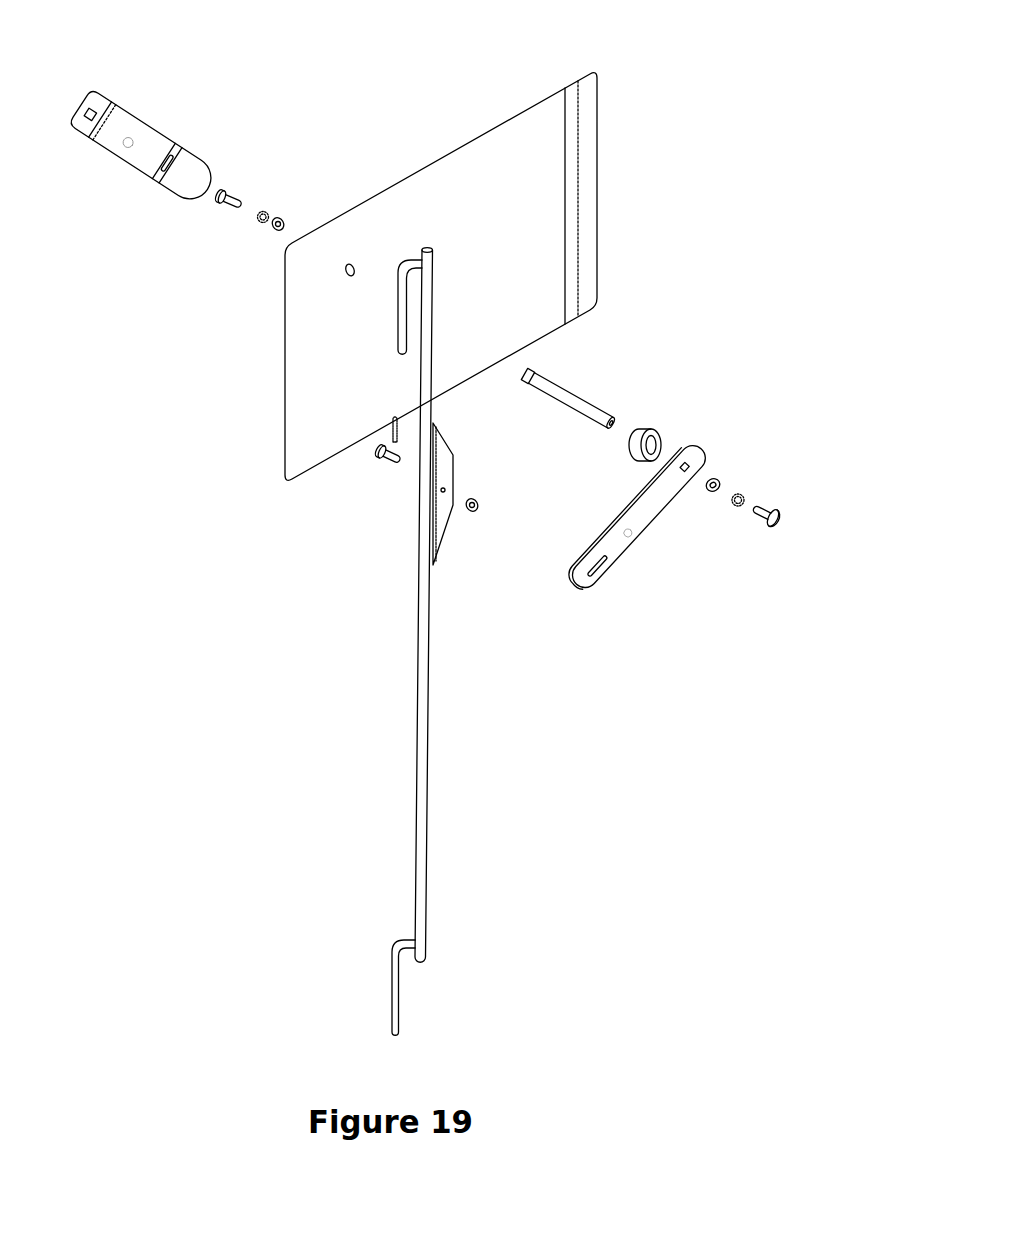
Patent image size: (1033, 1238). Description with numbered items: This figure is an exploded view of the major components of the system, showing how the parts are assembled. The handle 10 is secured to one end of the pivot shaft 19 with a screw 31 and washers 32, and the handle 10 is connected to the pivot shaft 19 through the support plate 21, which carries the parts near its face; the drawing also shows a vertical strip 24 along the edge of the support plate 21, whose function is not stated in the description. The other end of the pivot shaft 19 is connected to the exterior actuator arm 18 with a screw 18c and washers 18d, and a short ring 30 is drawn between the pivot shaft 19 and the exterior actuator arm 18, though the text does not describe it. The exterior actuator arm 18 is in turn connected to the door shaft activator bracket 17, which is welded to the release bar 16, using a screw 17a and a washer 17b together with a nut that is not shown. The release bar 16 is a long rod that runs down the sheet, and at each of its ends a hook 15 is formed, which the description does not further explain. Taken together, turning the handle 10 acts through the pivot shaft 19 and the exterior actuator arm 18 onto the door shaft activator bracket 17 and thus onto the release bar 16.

The handle 10 is at (143, 123).
The screw 31 is at (233, 190).
The washers 32 is at (267, 211).
The support plate 21 is at (508, 133).
The panel edge strip 24 is at (578, 195).
The hook 15 is at (402, 308).
The release bar 16 is at (435, 660).
The door shaft activator bracket 17 is at (448, 527).
The screw 17a is at (384, 462).
The washer 17b is at (447, 470).
The pivot shaft 19 is at (578, 392).
The ring bushing 30 is at (652, 440).
The exterior actuator arm 18 is at (622, 555).
The screw 18c is at (782, 522).
The washers 18d is at (743, 493).